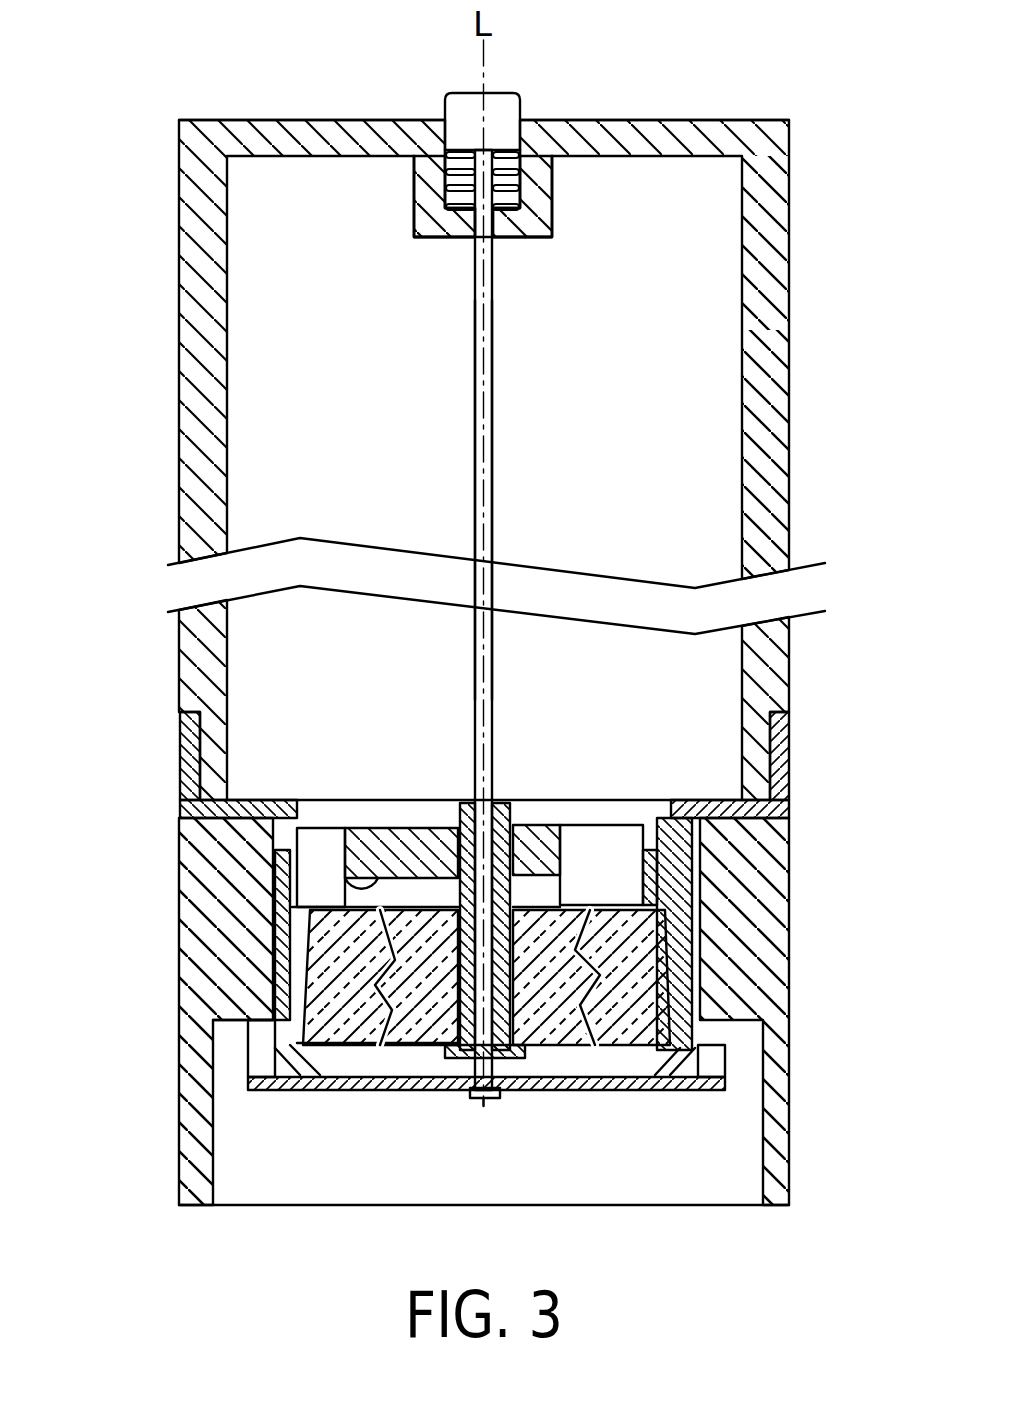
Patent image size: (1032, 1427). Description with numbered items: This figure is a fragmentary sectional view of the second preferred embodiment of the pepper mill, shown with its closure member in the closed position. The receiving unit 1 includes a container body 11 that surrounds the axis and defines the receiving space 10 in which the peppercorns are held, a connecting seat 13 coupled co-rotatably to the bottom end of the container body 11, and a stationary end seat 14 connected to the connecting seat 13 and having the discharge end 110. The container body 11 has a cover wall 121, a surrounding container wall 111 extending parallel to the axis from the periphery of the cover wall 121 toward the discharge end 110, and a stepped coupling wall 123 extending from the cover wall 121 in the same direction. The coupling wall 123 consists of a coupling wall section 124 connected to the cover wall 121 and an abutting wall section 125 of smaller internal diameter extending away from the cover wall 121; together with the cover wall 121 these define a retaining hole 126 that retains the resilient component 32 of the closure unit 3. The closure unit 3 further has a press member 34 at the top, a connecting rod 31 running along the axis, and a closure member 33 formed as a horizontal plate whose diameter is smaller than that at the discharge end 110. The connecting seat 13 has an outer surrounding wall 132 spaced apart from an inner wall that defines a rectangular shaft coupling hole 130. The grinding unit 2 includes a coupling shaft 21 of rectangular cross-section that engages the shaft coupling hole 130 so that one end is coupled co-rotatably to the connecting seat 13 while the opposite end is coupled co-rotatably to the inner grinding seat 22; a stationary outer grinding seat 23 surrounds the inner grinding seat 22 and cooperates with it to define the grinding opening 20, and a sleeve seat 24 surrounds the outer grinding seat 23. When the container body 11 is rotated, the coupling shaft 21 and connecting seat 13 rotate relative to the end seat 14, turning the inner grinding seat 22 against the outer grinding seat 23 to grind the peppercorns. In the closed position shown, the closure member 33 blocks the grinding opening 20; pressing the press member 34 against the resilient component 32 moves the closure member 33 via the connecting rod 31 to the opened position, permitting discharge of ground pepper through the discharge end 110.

The receiving unit 1 is at (160, 267).
The container body 11 is at (176, 372).
The surrounding container wall 111 is at (765, 410).
The cover wall 121 is at (672, 140).
The stepped coupling wall 123 is at (388, 33).
The coupling wall section 124 is at (433, 175).
The abutting wall section 125 is at (432, 227).
The retaining hole 126 is at (513, 197).
The resilient component 32 is at (465, 170).
The press member 34 is at (507, 105).
The closure unit 3 is at (503, 276).
The connecting rod 31 is at (492, 349).
The closure member 33 is at (638, 1090).
The receiving space 10 is at (265, 645).
The connecting seat 13 is at (172, 790).
The outer surrounding wall 132 is at (195, 750).
The shaft coupling hole 130 is at (380, 855).
The end seat 14 is at (228, 935).
The discharge end 110 is at (265, 1205).
The grinding opening 20 is at (335, 1045).
The coupling shaft 21 is at (515, 925).
The inner grinding seat 22 is at (540, 967).
The outer grinding seat 23 is at (650, 990).
The grinding unit 2 is at (737, 1041).
The sleeve seat 24 is at (690, 1068).